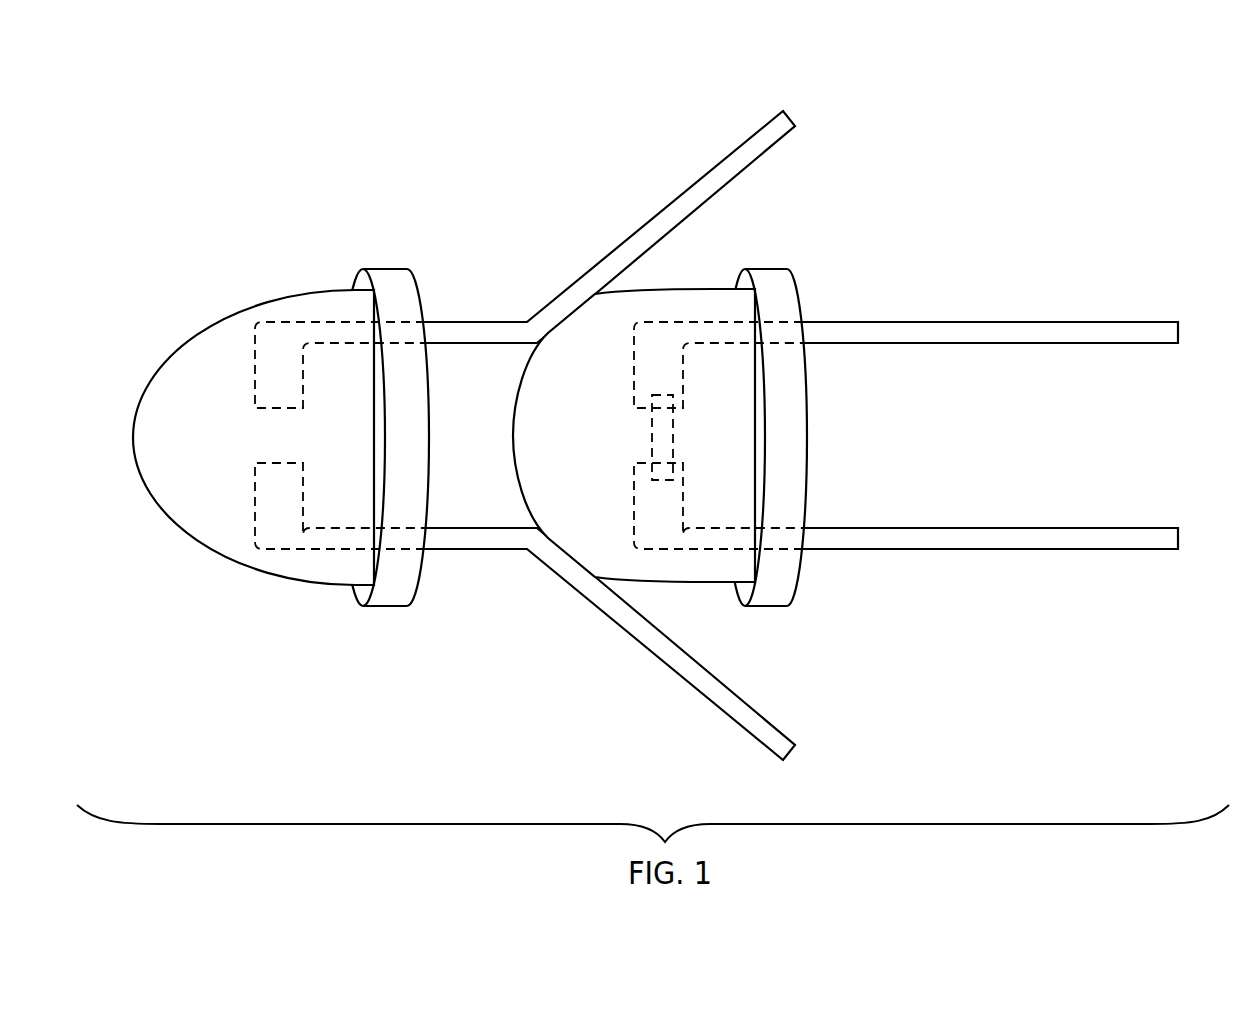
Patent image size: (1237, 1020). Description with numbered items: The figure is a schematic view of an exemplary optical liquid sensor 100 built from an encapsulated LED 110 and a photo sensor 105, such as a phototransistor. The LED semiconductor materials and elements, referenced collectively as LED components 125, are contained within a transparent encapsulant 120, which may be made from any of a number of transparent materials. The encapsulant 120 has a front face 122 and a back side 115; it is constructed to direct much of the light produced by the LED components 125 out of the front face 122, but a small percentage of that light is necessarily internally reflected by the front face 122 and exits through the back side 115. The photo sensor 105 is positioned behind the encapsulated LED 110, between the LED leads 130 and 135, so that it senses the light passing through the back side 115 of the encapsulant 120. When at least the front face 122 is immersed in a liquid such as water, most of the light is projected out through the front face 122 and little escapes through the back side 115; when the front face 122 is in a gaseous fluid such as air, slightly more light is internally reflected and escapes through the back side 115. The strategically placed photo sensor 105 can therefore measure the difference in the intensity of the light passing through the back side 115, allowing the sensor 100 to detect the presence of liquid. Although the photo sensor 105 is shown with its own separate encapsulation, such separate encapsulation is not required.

The optical liquid sensor 100 is at (241, 102).
The photo sensor 105 is at (700, 582).
The encapsulated LED 110 is at (340, 640).
The back side 115 is at (420, 293).
The encapsulant 120 is at (388, 268).
The front face 122 is at (183, 541).
The LED components 125 is at (302, 322).
The LED lead 130 is at (717, 162).
The LED lead 135 is at (730, 720).